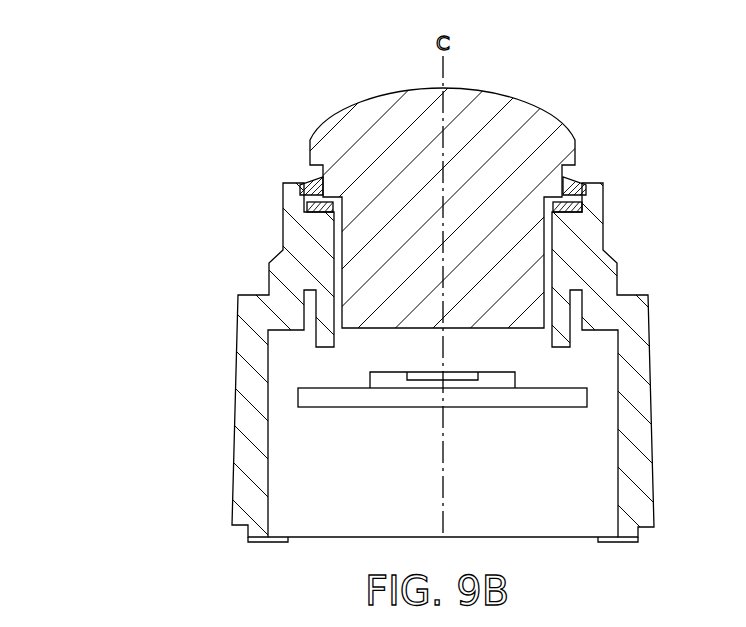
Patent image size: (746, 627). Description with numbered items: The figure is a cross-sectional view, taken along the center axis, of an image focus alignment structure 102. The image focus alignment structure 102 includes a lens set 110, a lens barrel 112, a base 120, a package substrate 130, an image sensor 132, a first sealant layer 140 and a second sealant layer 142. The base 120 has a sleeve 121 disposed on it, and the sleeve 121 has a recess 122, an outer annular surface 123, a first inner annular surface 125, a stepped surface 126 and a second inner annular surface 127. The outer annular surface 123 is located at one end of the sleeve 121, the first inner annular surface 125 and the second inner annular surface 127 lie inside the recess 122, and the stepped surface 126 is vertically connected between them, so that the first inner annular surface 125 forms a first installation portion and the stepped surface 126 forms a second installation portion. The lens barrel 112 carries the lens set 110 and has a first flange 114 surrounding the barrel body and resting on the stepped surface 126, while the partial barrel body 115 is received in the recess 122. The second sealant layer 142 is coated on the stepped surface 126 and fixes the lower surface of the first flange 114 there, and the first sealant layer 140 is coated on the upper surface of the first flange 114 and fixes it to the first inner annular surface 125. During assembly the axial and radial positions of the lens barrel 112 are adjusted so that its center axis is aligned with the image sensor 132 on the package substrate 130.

The image focus alignment structure 102 is at (68, 56).
The lens set 110 is at (530, 100).
The lens barrel 112 is at (590, 112).
The first flange 114 is at (596, 203).
The partial barrel body 115 is at (363, 277).
The base 120 is at (627, 422).
The sleeve 121 is at (618, 266).
The recess 122 is at (552, 333).
The outer annular surface 123 is at (290, 180).
The first inner annular surface 125 is at (297, 203).
The stepped surface 126 is at (306, 230).
The second inner annular surface 127 is at (282, 236).
The package substrate 130 is at (587, 398).
The image sensor 132 is at (467, 377).
The first sealant layer 140 is at (582, 178).
The second sealant layer 142 is at (564, 216).